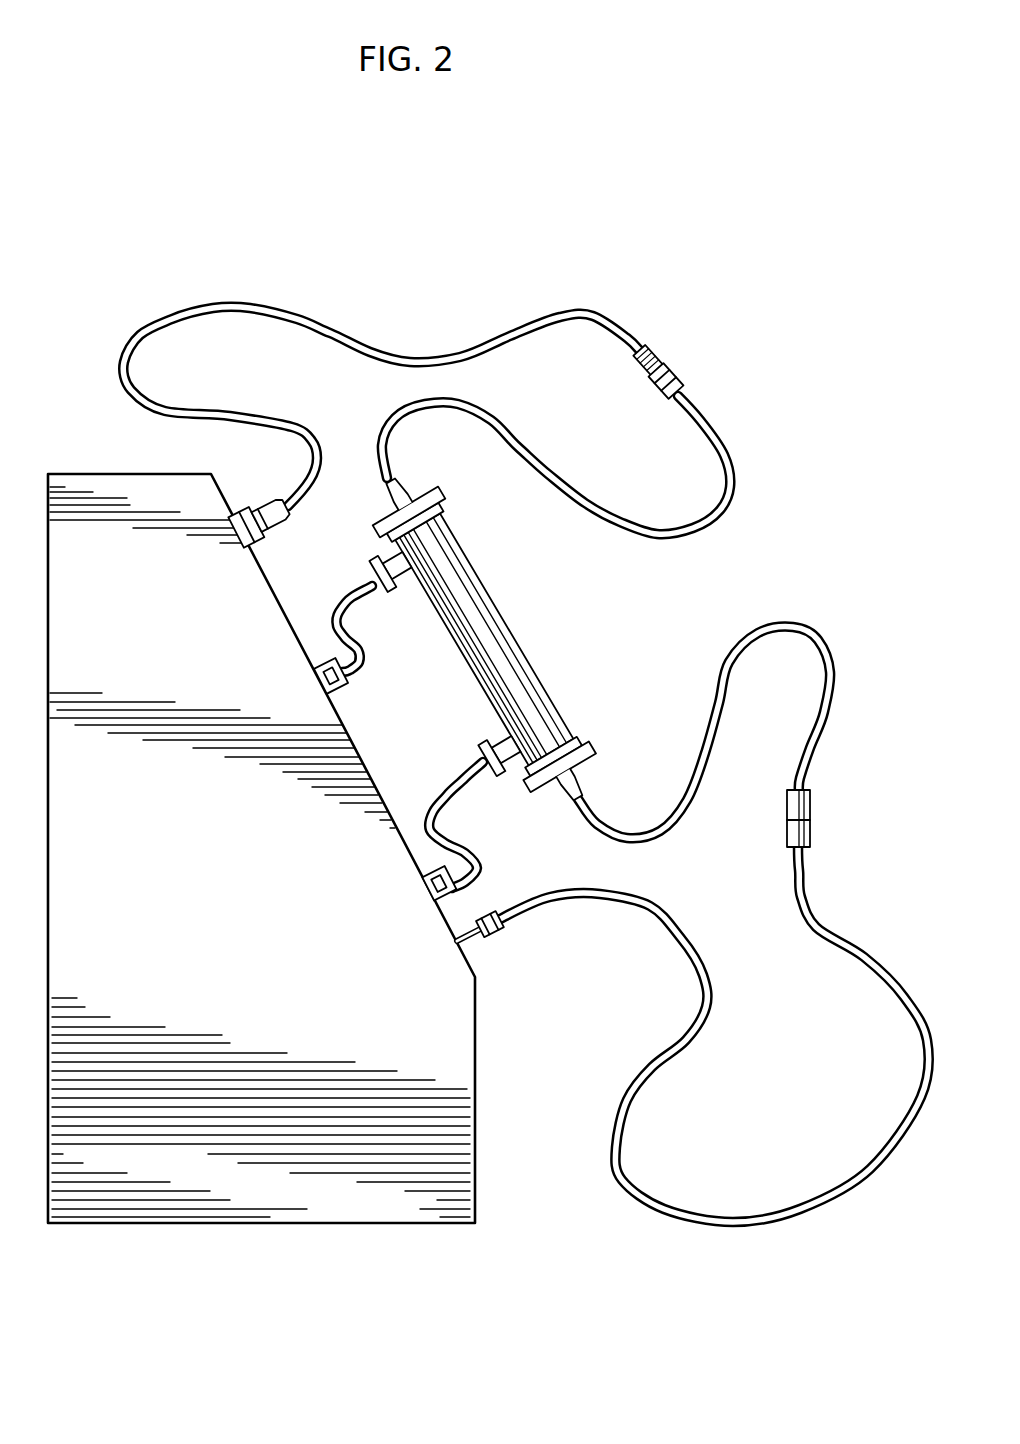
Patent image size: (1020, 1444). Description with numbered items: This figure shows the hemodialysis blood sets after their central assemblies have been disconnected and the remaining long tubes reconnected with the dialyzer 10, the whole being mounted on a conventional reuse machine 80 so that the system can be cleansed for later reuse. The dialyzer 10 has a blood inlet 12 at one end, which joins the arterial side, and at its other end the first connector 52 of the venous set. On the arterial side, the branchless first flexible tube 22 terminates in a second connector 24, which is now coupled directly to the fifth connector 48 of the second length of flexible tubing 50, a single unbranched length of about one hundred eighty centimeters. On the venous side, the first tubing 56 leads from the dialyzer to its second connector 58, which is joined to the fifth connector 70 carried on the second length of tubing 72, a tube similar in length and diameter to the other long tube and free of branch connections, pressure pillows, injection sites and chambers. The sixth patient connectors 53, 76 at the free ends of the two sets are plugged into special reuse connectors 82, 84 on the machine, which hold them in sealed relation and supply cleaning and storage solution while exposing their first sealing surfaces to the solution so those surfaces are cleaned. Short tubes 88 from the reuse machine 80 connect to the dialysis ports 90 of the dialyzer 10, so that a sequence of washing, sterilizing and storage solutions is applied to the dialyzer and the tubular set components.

The hemodialyzer 10 is at (538, 663).
The blood inlet 12 is at (588, 790).
The first flexible tube 22 is at (807, 627).
The second connector 24 is at (811, 800).
The fifth connector 48 is at (811, 830).
The second length of flexible tubing 50 is at (680, 1203).
The first connector 52 is at (407, 487).
The sixth patient connector 53 is at (503, 937).
The first tubing 56 is at (726, 506).
The second connector 58 is at (673, 373).
The fifth connector 70 is at (650, 353).
The second length of tubing 72 is at (403, 357).
The sixth patient connector 76 is at (288, 525).
The reuse machine 80 is at (228, 891).
The reuse connector 82 is at (467, 937).
The reuse connector 84 is at (241, 520).
The short tubes 88 is at (448, 786).
The dialysis ports 90 is at (507, 740).